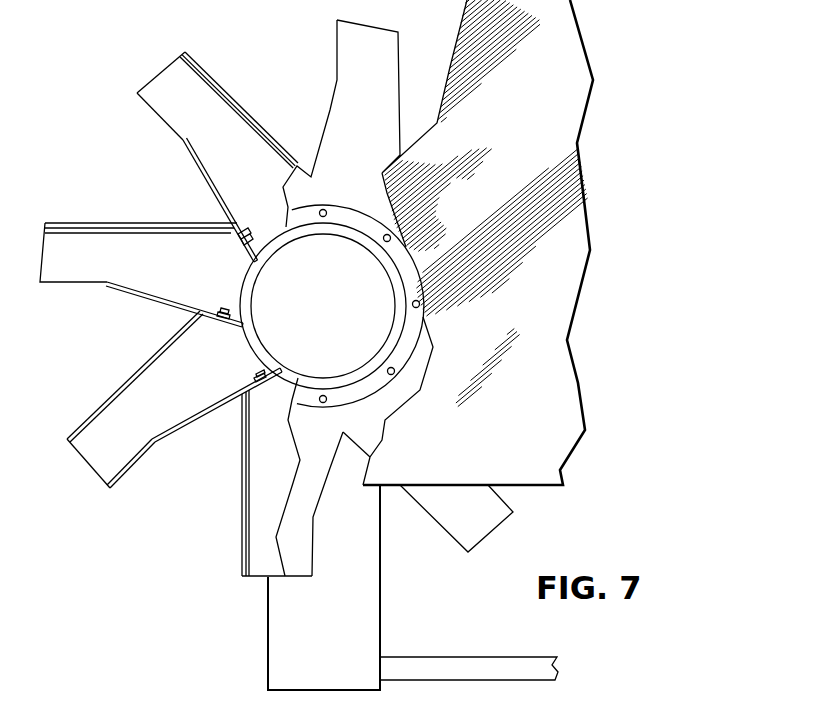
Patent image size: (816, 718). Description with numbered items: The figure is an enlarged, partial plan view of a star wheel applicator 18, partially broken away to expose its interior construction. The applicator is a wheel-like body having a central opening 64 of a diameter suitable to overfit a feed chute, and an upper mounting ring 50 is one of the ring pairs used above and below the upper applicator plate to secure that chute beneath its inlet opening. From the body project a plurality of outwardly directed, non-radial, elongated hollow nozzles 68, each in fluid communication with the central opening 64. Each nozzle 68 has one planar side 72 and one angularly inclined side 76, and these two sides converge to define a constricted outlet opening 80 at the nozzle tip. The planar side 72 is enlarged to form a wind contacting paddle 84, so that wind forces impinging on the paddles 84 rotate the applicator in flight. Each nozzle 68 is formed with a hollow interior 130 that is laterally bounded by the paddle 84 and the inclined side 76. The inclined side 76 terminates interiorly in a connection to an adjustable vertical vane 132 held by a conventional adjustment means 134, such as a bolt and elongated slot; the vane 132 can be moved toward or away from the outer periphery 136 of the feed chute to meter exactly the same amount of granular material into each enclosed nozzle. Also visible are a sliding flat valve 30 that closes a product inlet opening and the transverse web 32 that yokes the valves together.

The star wheel applicator 18 is at (112, 381).
The sliding flat valve 30 is at (360, 583).
The transverse web 32 is at (477, 661).
The upper mounting ring 50 is at (347, 216).
The central opening 64 is at (360, 320).
The hollow nozzle 68 is at (205, 73).
The planar side 72 is at (170, 226).
The angularly inclined side 76 is at (148, 302).
The constricted outlet opening 80 is at (85, 466).
The wind contacting paddle 84 is at (250, 114).
The hollow interior 130 is at (83, 243).
The adjustable vertical vane 132 is at (255, 251).
The adjustment means 134 is at (260, 372).
The outer periphery of feed chute 136 is at (258, 270).